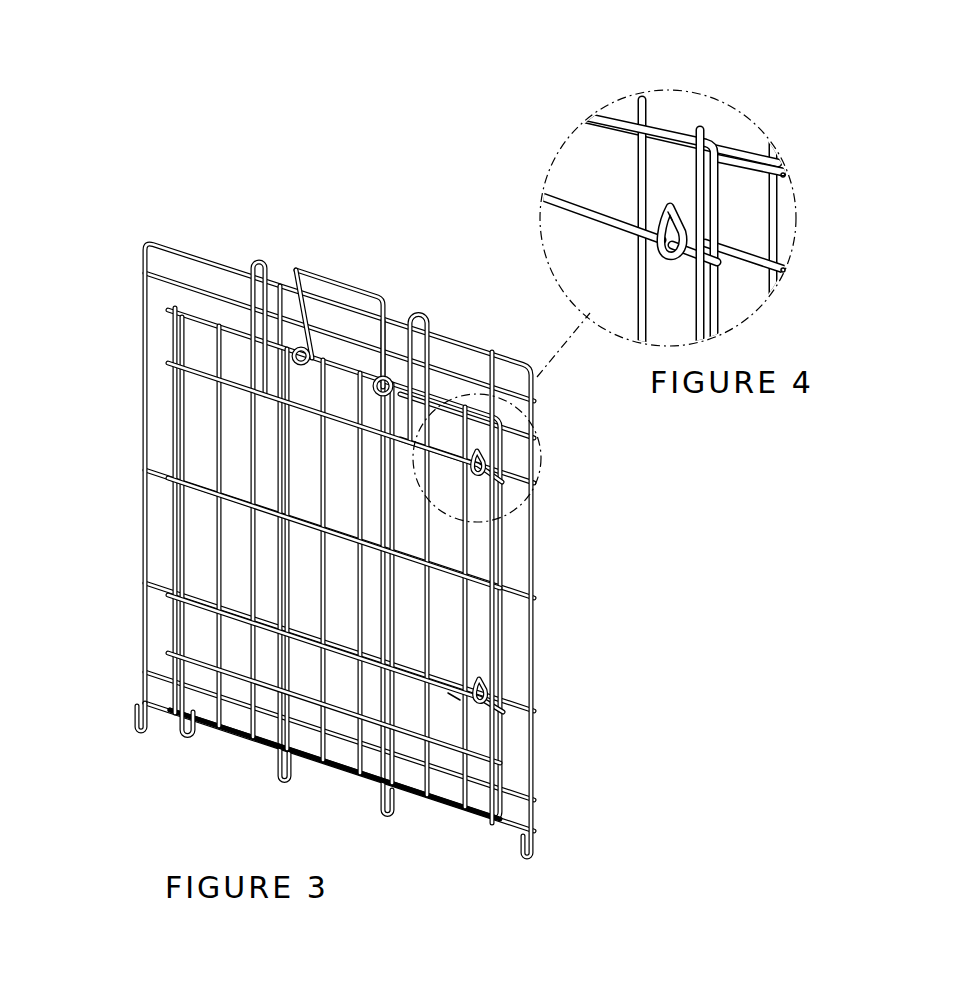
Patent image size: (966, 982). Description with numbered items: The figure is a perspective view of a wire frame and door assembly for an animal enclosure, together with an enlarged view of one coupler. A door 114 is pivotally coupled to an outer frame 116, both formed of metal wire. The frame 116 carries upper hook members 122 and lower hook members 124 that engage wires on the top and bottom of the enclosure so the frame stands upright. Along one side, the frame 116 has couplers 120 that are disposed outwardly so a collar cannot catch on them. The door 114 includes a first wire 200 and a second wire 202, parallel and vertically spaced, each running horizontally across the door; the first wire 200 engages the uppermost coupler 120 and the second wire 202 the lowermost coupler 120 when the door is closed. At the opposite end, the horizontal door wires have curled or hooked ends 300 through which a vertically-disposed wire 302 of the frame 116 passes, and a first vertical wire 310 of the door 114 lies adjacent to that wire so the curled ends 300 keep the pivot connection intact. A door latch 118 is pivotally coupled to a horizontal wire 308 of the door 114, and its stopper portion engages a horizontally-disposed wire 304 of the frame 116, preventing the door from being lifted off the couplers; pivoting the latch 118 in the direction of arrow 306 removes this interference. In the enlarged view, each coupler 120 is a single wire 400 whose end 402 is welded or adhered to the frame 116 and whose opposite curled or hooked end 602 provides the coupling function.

In FIG. 3, the outer frame 116 is at (145, 503).
In FIG. 4, the outer frame 116 is at (776, 224).
In FIG. 3, the lower hook members 124 is at (378, 806).
In FIG. 3, the upper hook members 122 is at (247, 257).
In FIG. 3, the door latch 118 is at (323, 265).
In FIG. 3, the arrow 306 is at (378, 414).
In FIG. 3, the horizontal wire of the door 308 is at (198, 320).
In FIG. 3, the horizontally-disposed wire of the frame 304 is at (230, 347).
In FIG. 3, the vertically-disposed wire of the frame 302 is at (173, 438).
In FIG. 3, the first vertical wire 310 is at (183, 557).
In FIG. 3, the curled or hooked ends 300 is at (167, 364).
In FIG. 3, the couplers 120 is at (488, 462).
In FIG. 4, the couplers 120 is at (673, 207).
In FIG. 3, the first wire 200 is at (455, 470).
In FIG. 4, the first wire 200 is at (572, 198).
In FIG. 3, the second wire 202 is at (448, 693).
In FIG. 4, the door 114 is at (699, 137).
In FIG. 4, the curled or hooked end 602 is at (688, 228).
In FIG. 4, the wire 400 is at (748, 264).
In FIG. 4, the end 402 is at (785, 263).